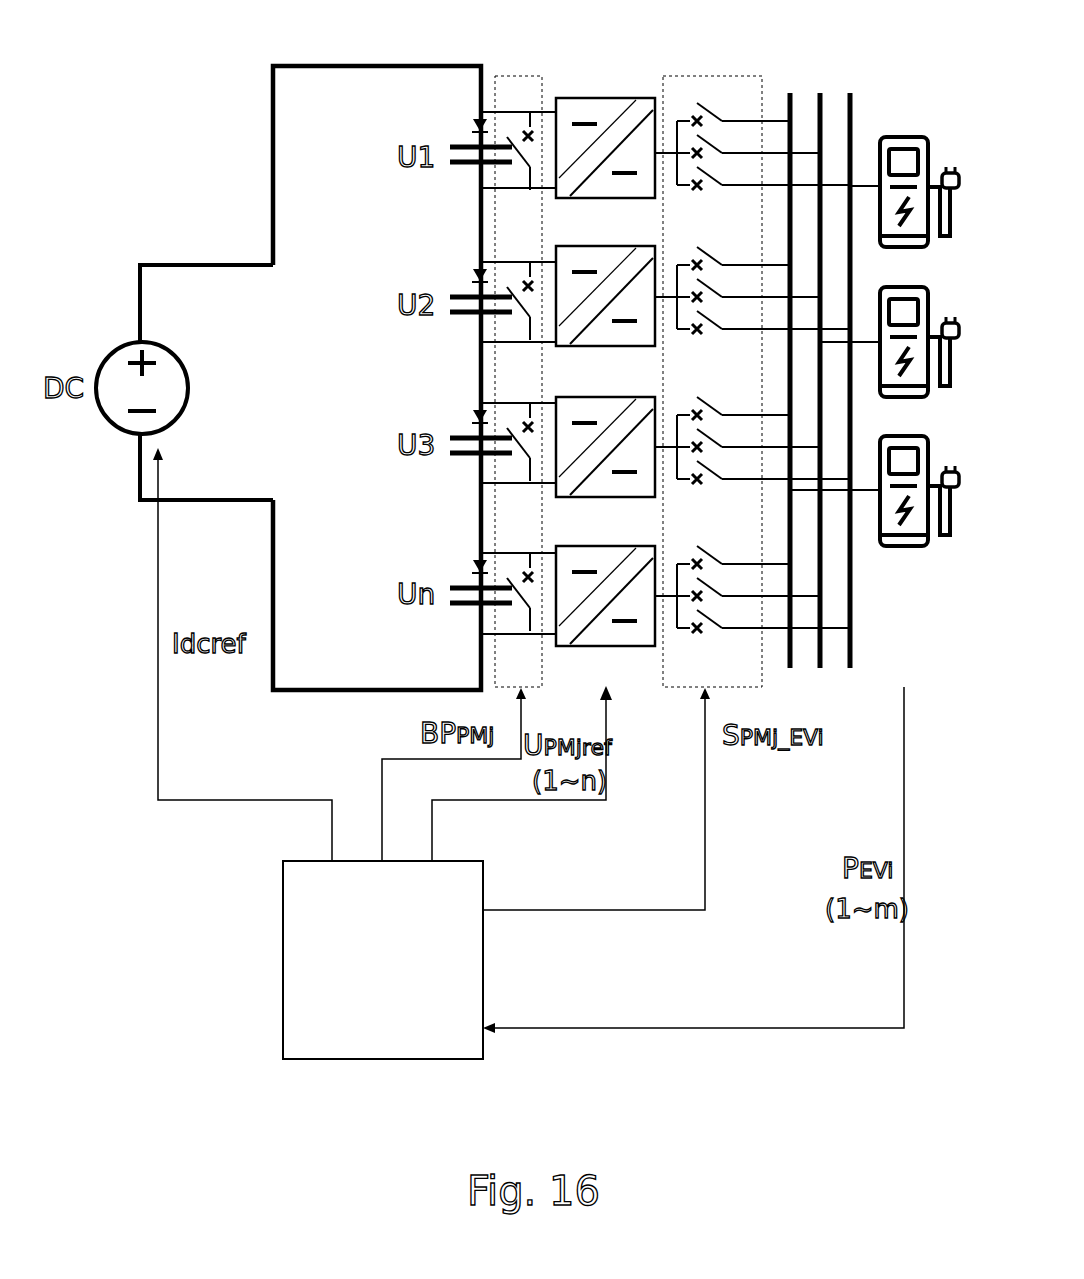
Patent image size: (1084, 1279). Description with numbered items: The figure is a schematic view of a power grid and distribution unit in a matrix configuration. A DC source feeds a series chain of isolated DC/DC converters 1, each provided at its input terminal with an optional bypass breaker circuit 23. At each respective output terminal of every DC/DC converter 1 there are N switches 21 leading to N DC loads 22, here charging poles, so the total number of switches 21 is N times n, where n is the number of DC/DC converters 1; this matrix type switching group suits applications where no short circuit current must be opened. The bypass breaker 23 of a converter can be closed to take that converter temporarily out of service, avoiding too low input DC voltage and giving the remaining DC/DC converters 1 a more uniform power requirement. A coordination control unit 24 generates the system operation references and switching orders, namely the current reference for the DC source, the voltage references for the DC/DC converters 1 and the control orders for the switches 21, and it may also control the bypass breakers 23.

The DC/DC converter 1 is at (600, 97).
The switch 21 is at (713, 92).
The load 22 is at (906, 131).
The bypass breaker circuit 23 is at (510, 82).
The control unit 24 is at (283, 991).